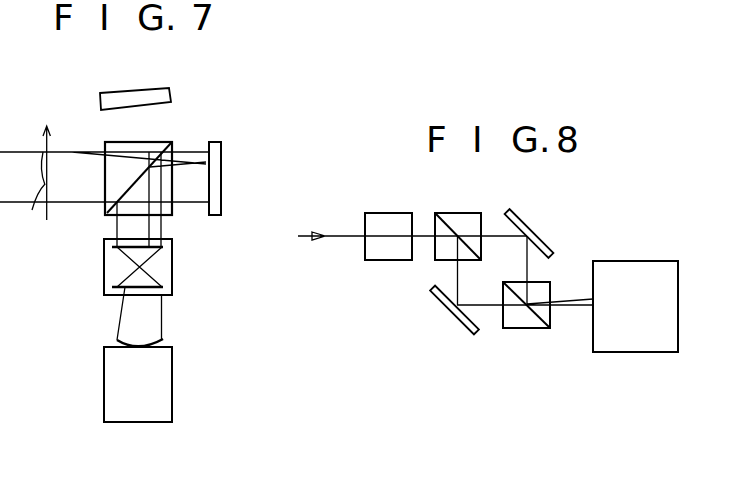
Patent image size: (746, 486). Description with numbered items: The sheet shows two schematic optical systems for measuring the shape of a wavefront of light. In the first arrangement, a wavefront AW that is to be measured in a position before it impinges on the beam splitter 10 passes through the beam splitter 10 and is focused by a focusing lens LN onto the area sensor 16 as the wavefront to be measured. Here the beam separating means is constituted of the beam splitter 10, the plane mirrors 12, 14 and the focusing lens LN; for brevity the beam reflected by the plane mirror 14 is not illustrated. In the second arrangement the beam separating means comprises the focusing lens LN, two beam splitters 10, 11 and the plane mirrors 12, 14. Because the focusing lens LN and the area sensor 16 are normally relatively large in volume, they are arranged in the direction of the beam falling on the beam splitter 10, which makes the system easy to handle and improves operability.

In FIG. 7, the beam splitter 10 is at (152, 143).
In FIG. 8, the beam splitter 10 is at (470, 222).
In FIG. 8, the beam splitter 11 is at (532, 325).
In FIG. 7, the plane mirror 12 is at (222, 187).
In FIG. 8, the plane mirror 12 is at (538, 243).
In FIG. 7, the plane mirror 14 is at (163, 98).
In FIG. 8, the plane mirror 14 is at (462, 325).
In FIG. 7, the area sensor 16 is at (172, 397).
In FIG. 8, the area sensor 16 is at (640, 265).
In FIG. 7, the focusing lens LN is at (172, 265).
In FIG. 8, the focusing lens LN is at (394, 251).
In FIG. 7, the wavefront AW is at (35, 181).